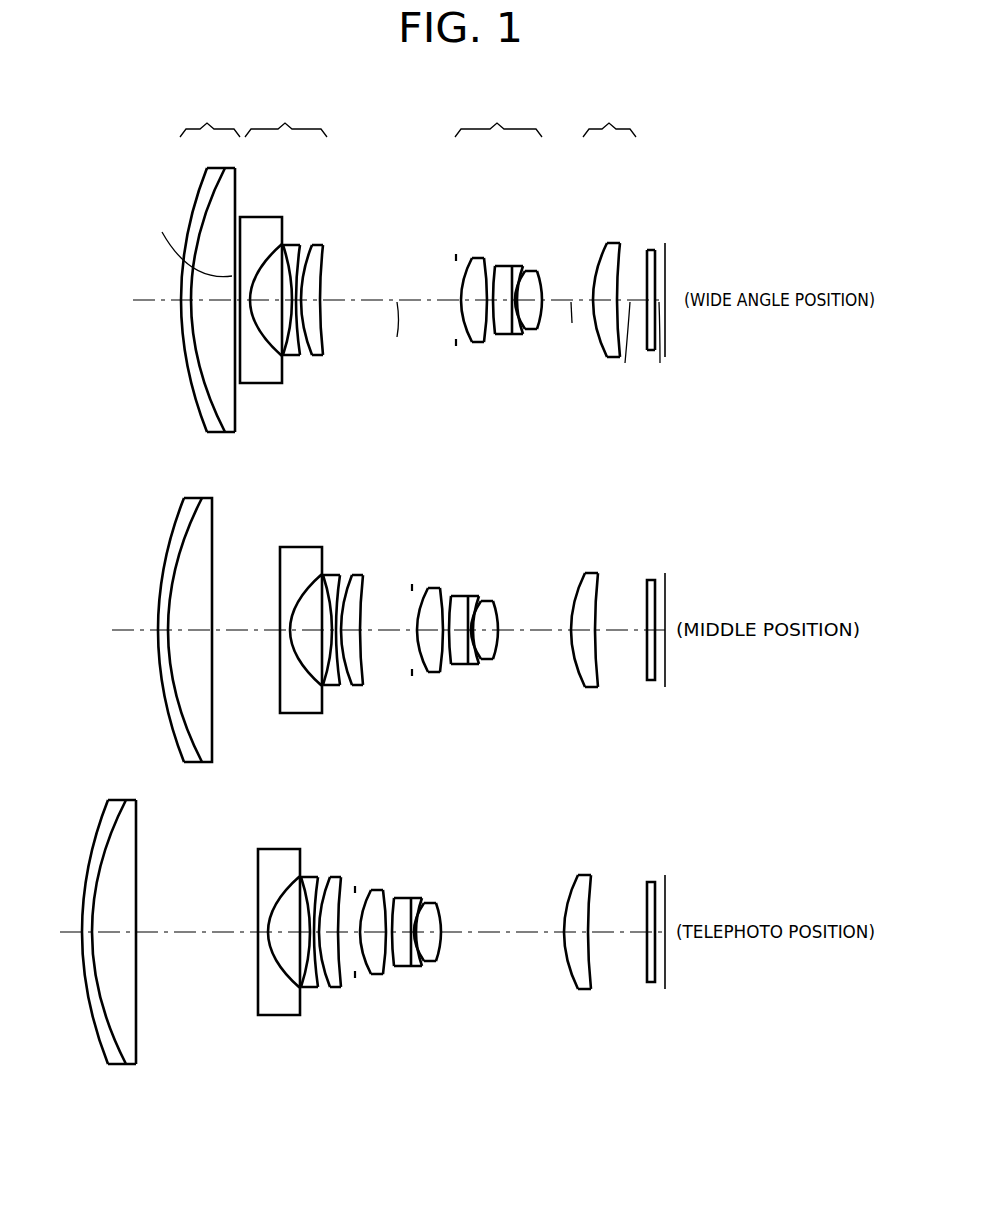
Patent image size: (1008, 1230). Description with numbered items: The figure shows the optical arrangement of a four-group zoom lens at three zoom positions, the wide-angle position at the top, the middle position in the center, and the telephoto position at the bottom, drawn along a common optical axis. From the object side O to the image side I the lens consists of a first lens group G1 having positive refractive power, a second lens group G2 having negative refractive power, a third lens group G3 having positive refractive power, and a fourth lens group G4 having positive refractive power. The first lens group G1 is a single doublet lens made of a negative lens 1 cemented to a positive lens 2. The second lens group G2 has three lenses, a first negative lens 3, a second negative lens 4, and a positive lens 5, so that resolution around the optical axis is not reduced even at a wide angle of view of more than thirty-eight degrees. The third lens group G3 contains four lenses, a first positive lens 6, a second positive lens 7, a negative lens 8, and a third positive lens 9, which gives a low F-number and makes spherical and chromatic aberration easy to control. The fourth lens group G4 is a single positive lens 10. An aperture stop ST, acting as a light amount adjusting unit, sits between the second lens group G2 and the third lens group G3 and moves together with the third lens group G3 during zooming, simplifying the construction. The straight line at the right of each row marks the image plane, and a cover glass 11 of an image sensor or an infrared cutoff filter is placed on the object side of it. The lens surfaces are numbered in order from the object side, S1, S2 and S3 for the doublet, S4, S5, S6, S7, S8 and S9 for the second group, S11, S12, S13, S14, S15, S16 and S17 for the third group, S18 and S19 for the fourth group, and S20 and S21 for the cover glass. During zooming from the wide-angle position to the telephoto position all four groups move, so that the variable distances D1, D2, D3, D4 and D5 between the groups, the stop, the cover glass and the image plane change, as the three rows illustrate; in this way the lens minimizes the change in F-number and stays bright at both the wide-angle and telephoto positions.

The first lens group G1 is at (210, 115).
The second lens group G2 is at (286, 115).
The third lens group G3 is at (498, 115).
The fourth lens group G4 is at (609, 115).
The object side O is at (388, 301).
The image side I is at (672, 300).
The aperture stop ST is at (449, 260).
The variable distance D1 is at (189, 242).
The variable distance D2 is at (397, 331).
The variable distance D3 is at (572, 326).
The variable distance D4 is at (625, 347).
The variable distance D5 is at (660, 347).
The first lens surface S1 is at (180, 340).
The second lens surface S2 is at (197, 367).
The third lens surface S3 is at (233, 390).
The fourth lens surface S4 is at (242, 355).
The fifth lens surface S5 is at (277, 370).
The sixth lens surface S6 is at (282, 262).
The seventh lens surface S7 is at (300, 262).
The eighth lens surface S8 is at (305, 273).
The ninth lens surface S9 is at (322, 280).
The eleventh lens surface S11 is at (470, 258).
The twelfth lens surface S12 is at (483, 263).
The thirteenth lens surface S13 is at (495, 323).
The fourteenth lens surface S14 is at (508, 323).
The fifteenth lens surface S15 is at (527, 327).
The sixteenth lens surface S16 is at (518, 273).
The seventeenth lens surface S17 is at (540, 282).
The eighteenth lens surface S18 is at (598, 260).
The nineteenth lens surface S19 is at (613, 258).
The twentieth surface (filter front) S20 is at (652, 250).
The twenty-first surface (filter rear) S21 is at (657, 262).
The negative lens 1 is at (190, 498).
The positive lens 2 is at (210, 498).
The first negative lens 3 is at (295, 548).
The second negative lens 4 is at (333, 575).
The positive lens 5 is at (360, 575).
The first positive lens 6 is at (433, 588).
The second positive lens 7 is at (458, 597).
The negative lens 8 is at (475, 597).
The third positive lens 9 is at (495, 602).
The positive lens 10 is at (590, 573).
The cover glass 11 is at (652, 580).